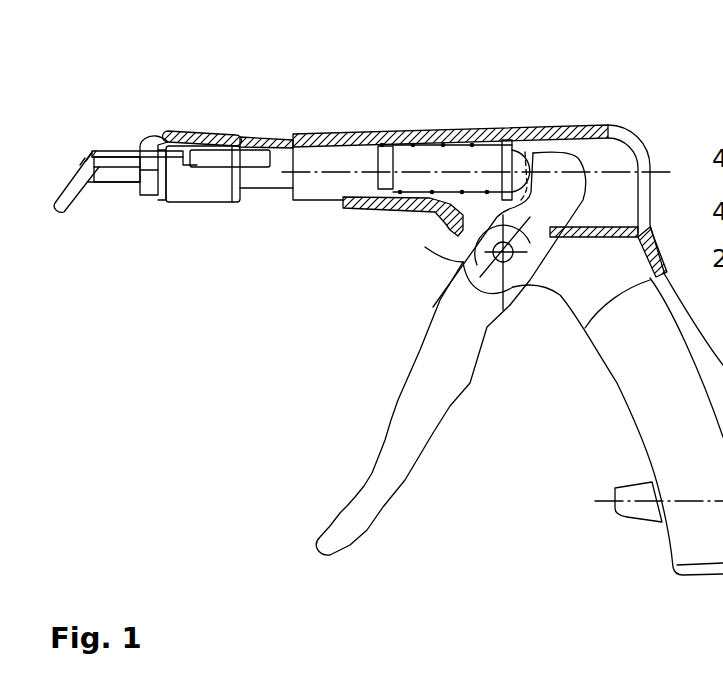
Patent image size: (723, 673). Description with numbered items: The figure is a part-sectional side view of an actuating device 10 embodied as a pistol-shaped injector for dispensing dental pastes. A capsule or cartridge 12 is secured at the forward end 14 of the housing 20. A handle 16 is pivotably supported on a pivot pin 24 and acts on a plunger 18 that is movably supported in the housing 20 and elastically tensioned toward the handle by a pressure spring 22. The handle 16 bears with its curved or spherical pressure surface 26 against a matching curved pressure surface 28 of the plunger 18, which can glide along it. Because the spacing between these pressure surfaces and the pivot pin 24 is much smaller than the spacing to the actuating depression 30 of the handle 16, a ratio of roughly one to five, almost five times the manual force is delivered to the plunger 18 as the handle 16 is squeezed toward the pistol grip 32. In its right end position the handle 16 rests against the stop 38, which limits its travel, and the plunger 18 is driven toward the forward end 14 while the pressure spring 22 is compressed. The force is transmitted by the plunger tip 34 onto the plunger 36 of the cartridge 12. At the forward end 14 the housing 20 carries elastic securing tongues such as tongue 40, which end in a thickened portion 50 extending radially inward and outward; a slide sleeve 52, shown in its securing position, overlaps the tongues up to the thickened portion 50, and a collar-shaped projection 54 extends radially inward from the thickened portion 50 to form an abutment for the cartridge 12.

The actuating device 10 is at (558, 98).
The cartridge 12 is at (100, 150).
The forward end 14 is at (97, 228).
The handle 16 is at (373, 498).
The plunger 18 is at (408, 160).
The housing 20 is at (333, 133).
The pressure spring 22 is at (465, 125).
The pivot pin 24 is at (490, 255).
The pressure surface 26 is at (543, 150).
The pressure surface 28 is at (524, 148).
The actuating depression 30 is at (369, 414).
The pistol grip 32 is at (697, 550).
The plunger tip 34 is at (216, 150).
The plunger 36 is at (172, 132).
The stop 38 is at (626, 508).
The securing tongue 40 is at (152, 137).
The thickened portion 50 is at (137, 158).
The slide sleeve 52 is at (221, 190).
The collar-shaped projection 54 is at (166, 195).